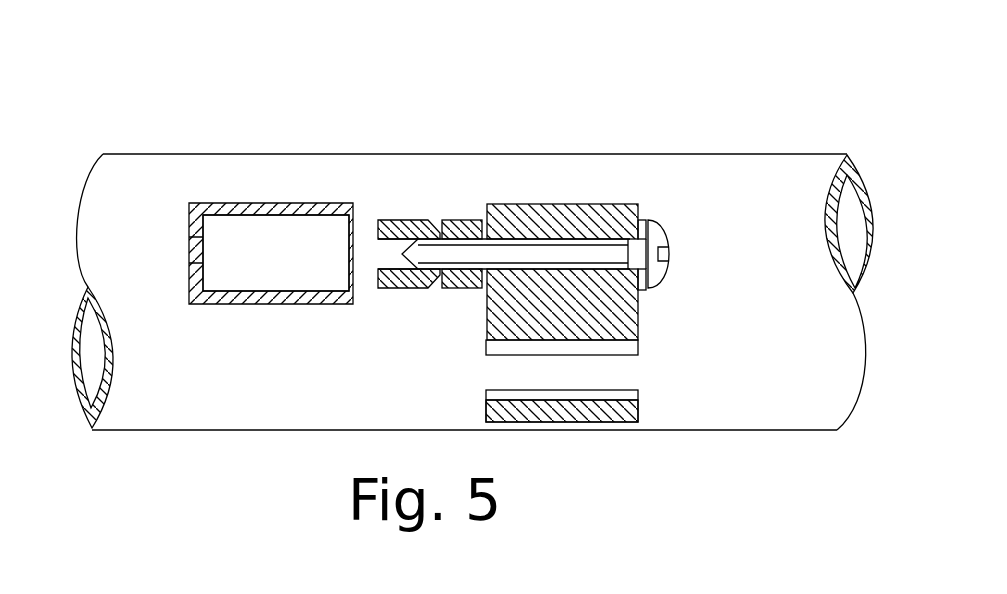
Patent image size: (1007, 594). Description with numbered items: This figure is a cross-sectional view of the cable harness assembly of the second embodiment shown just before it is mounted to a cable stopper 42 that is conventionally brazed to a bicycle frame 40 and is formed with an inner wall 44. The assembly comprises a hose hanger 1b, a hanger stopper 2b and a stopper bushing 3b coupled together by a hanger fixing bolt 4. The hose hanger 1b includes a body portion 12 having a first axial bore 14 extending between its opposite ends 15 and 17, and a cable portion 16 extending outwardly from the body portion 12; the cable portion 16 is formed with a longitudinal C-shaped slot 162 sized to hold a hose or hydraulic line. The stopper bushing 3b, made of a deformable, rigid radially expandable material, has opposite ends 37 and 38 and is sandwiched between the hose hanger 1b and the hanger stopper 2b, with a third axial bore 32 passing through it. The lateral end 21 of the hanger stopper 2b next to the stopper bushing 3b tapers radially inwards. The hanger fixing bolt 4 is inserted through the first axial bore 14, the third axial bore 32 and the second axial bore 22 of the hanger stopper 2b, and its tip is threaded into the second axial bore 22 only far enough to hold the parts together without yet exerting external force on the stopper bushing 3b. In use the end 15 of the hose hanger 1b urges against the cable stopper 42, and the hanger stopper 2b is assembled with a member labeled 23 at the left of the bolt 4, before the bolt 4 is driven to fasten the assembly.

The bicycle frame 40 is at (145, 167).
The cable stopper 42 is at (271, 188).
The inner wall 44 is at (275, 221).
The left nut member 23 is at (372, 233).
The second axial bore 22 is at (388, 259).
The hanger stopper 2b is at (403, 217).
The lateral end 21 is at (458, 151).
The third axial bore 32 is at (450, 217).
The stopper bushing 3b is at (467, 217).
The first axial bore 14 is at (619, 223).
The hose hanger 1b is at (553, 208).
The end 15 is at (487, 210).
The body portion 12 is at (615, 205).
The end 17 is at (642, 218).
The slot 162 is at (627, 373).
The end 37 is at (557, 290).
The end 38 is at (433, 272).
The hanger fixing bolt 4 is at (660, 235).
The cable portion 16 is at (633, 412).